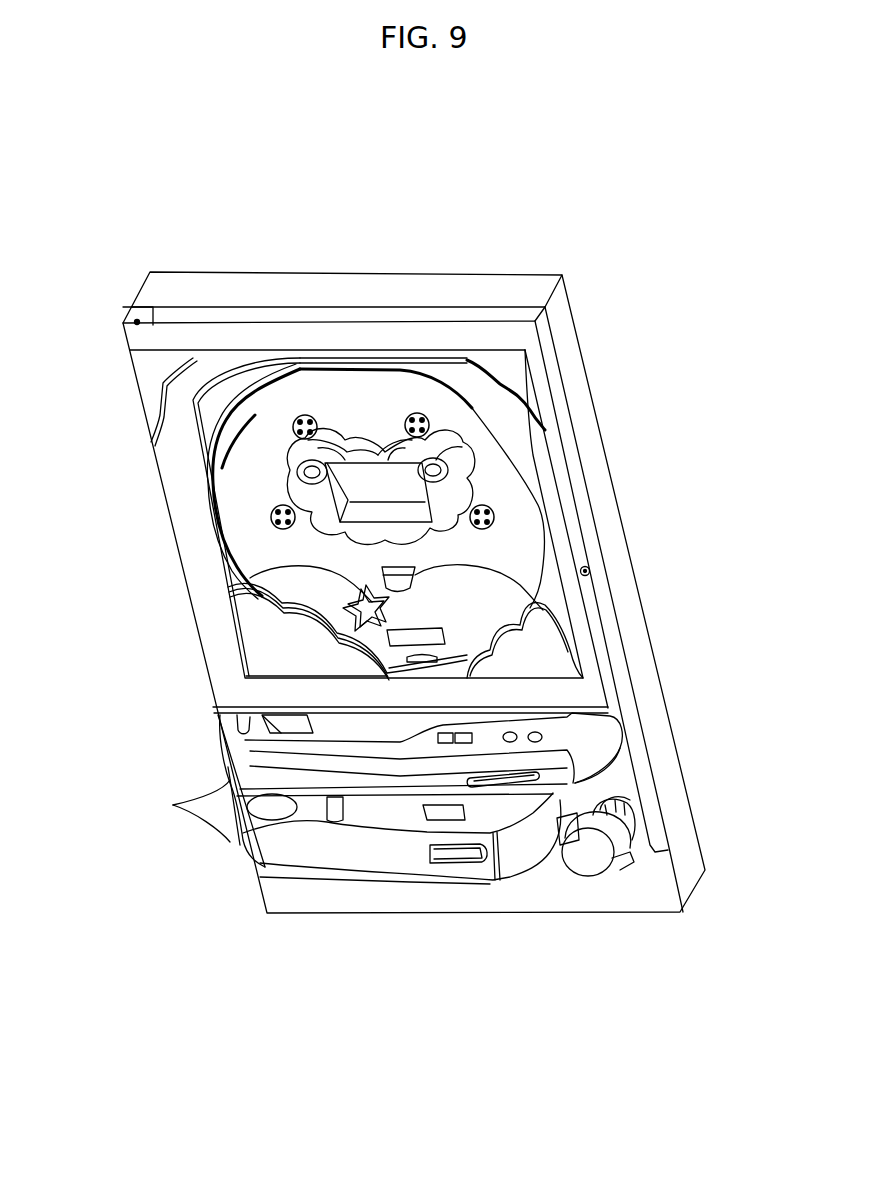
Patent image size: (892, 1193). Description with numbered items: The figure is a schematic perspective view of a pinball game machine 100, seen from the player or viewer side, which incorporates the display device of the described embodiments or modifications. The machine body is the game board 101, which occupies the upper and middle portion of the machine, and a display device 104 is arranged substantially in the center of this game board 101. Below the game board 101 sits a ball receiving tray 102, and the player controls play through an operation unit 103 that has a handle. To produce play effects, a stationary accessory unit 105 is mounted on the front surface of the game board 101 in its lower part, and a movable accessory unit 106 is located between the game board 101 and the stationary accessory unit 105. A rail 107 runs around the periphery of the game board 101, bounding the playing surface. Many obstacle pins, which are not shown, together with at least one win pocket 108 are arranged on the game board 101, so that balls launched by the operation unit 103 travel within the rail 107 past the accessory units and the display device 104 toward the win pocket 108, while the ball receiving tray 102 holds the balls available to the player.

The pinball game machine 100 is at (644, 936).
The game board 101 is at (510, 488).
The ball receiving tray 102 is at (173, 805).
The operation unit 103 is at (627, 837).
The display device 104 is at (365, 487).
The stationary accessory unit 105 is at (268, 638).
The movable accessory unit 106 is at (250, 571).
The rail 107 is at (235, 432).
The win pocket 108 is at (578, 600).